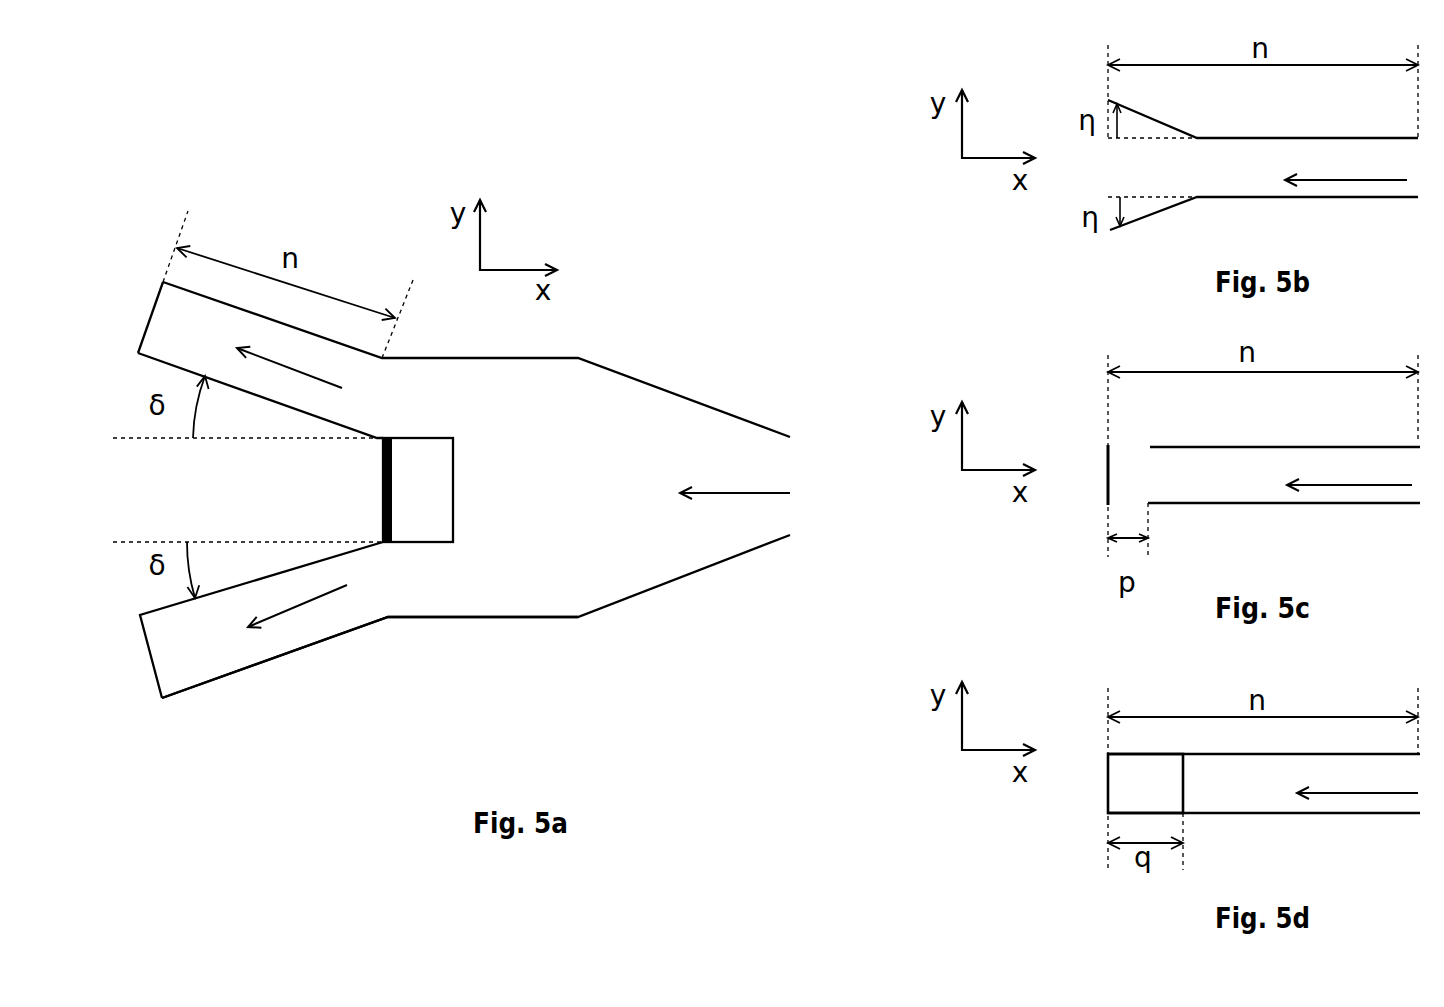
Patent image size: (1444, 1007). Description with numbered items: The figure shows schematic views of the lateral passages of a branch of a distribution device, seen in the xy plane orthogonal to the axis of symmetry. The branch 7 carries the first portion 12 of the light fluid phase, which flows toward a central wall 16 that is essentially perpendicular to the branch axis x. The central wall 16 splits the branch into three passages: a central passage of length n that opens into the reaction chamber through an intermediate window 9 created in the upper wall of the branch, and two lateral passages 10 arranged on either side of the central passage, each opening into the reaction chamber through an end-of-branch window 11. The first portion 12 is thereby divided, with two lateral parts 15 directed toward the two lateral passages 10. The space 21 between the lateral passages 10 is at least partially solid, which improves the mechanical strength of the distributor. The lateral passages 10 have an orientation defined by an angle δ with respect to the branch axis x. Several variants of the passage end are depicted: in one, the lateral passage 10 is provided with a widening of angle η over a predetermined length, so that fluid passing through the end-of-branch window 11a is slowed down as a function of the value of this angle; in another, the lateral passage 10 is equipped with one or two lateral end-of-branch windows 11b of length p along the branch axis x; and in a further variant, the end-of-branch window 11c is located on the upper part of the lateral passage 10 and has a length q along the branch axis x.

In FIG. 5A, the flow channel 7 is at (790, 477).
In FIG. 5A, the intermediate window 9 is at (430, 483).
In FIG. 5A, the lateral passage 10 is at (360, 612).
In FIG. 5A, the end-of-branch window 11 is at (235, 673).
In FIG. 5B, the end-of-branch window 11a is at (1112, 173).
In FIG. 5C, the lateral end-of-branch window 11b is at (1123, 443).
In FIG. 5D, the end-of-branch window 11c is at (1133, 783).
In FIG. 5A, the first portion of the light fluid phase 12 is at (735, 512).
In FIG. 5A, the lateral part 15 is at (269, 485).
In FIG. 5B, the lateral part 15 is at (1346, 166).
In FIG. 5C, the lateral part 15 is at (1349, 472).
In FIG. 5D, the lateral part 15 is at (1357, 780).
In FIG. 5A, the central wall 16 is at (390, 508).
In FIG. 5A, the space between the lateral passages 21 is at (280, 490).